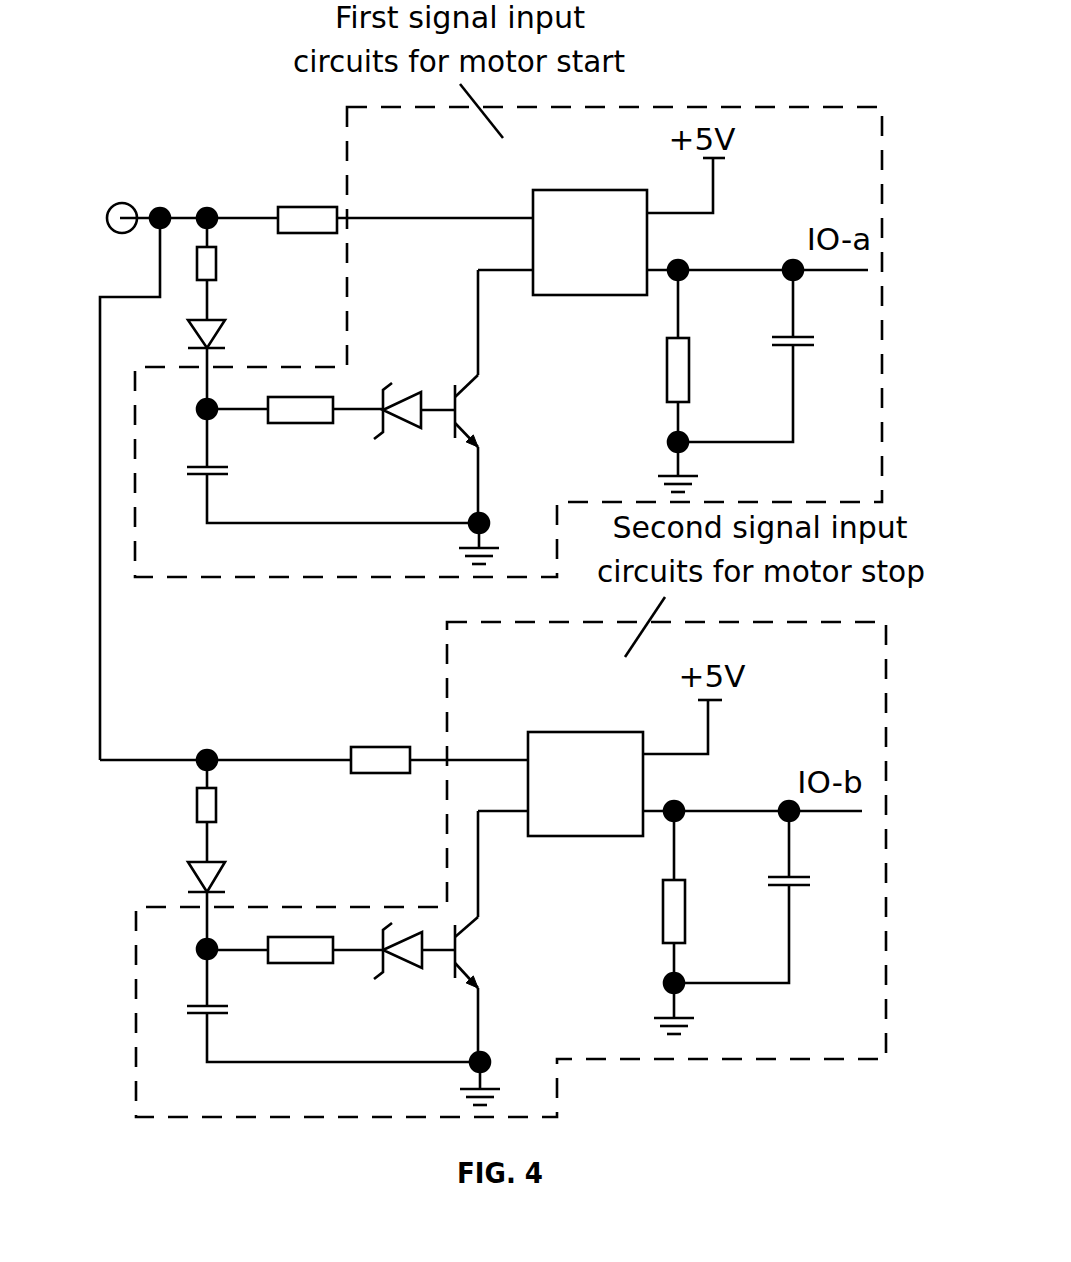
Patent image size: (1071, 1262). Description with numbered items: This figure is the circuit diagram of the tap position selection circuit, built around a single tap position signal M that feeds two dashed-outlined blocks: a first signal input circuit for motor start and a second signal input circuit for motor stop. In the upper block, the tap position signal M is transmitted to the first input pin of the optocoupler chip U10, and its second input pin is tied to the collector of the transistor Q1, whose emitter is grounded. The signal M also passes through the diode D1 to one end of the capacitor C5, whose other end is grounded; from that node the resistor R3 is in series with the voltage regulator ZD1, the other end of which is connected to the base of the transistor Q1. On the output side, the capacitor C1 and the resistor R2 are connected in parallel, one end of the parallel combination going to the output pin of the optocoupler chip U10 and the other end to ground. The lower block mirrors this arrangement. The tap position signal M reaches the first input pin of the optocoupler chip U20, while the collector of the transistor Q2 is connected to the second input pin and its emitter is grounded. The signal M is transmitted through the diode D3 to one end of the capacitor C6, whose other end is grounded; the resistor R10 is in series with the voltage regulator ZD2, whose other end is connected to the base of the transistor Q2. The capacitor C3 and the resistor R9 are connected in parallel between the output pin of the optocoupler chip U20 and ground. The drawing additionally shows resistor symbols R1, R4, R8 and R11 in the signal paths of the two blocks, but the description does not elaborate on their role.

The tap position signal M is at (122, 196).
The first resistor R1 is at (307, 201).
The fourth resistor R4 is at (233, 264).
The diode D1 is at (231, 336).
The resistor R3 is at (300, 430).
The voltage regulator ZD1 is at (402, 435).
The transistor Q1 is at (450, 390).
The capacitor C5 is at (225, 490).
The optocoupler chip U10 is at (590, 223).
The resistor R2 is at (647, 370).
The capacitor C1 is at (778, 364).
The eighth resistor R8 is at (382, 740).
The eleventh resistor R11 is at (245, 806).
The diode D3 is at (235, 880).
The resistor R10 is at (302, 975).
The voltage regulator ZD2 is at (399, 976).
The transistor Q2 is at (490, 952).
The capacitor C6 is at (189, 1033).
The optocoupler chip U20 is at (585, 764).
The resistor R9 is at (645, 911).
The capacitor C3 is at (770, 906).